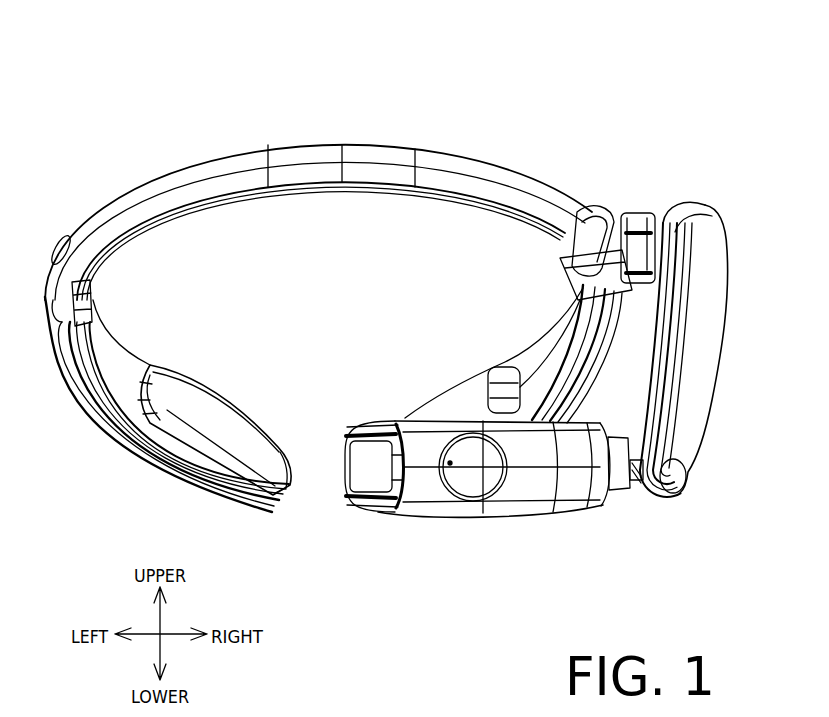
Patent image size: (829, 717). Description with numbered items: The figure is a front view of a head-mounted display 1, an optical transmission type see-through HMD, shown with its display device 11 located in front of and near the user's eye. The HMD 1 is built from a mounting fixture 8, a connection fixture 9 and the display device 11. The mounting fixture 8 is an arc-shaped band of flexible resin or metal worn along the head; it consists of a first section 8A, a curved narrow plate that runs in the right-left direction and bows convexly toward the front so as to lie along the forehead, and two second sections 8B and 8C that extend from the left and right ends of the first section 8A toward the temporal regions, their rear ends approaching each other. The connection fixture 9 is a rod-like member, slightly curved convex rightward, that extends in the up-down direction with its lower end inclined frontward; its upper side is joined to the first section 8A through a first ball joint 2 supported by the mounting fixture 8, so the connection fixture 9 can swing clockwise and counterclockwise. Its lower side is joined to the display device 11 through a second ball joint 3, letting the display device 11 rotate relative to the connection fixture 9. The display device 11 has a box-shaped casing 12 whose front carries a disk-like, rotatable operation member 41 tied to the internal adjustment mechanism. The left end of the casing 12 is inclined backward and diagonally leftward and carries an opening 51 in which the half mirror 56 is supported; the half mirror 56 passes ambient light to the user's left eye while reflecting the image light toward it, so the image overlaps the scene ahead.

The head-mounted display 1 is at (404, 307).
The first ball joint 2 is at (652, 190).
The second ball joint 3 is at (633, 513).
The mounting fixture 8 is at (350, 300).
The first section 8A is at (318, 146).
The second section 8B is at (100, 432).
The second section 8C is at (612, 357).
The connection fixture 9 is at (748, 315).
The display device 11 is at (477, 495).
The casing 12 is at (514, 510).
The operation member 41 is at (470, 478).
The opening 51 is at (350, 437).
The half mirror 56 is at (367, 466).